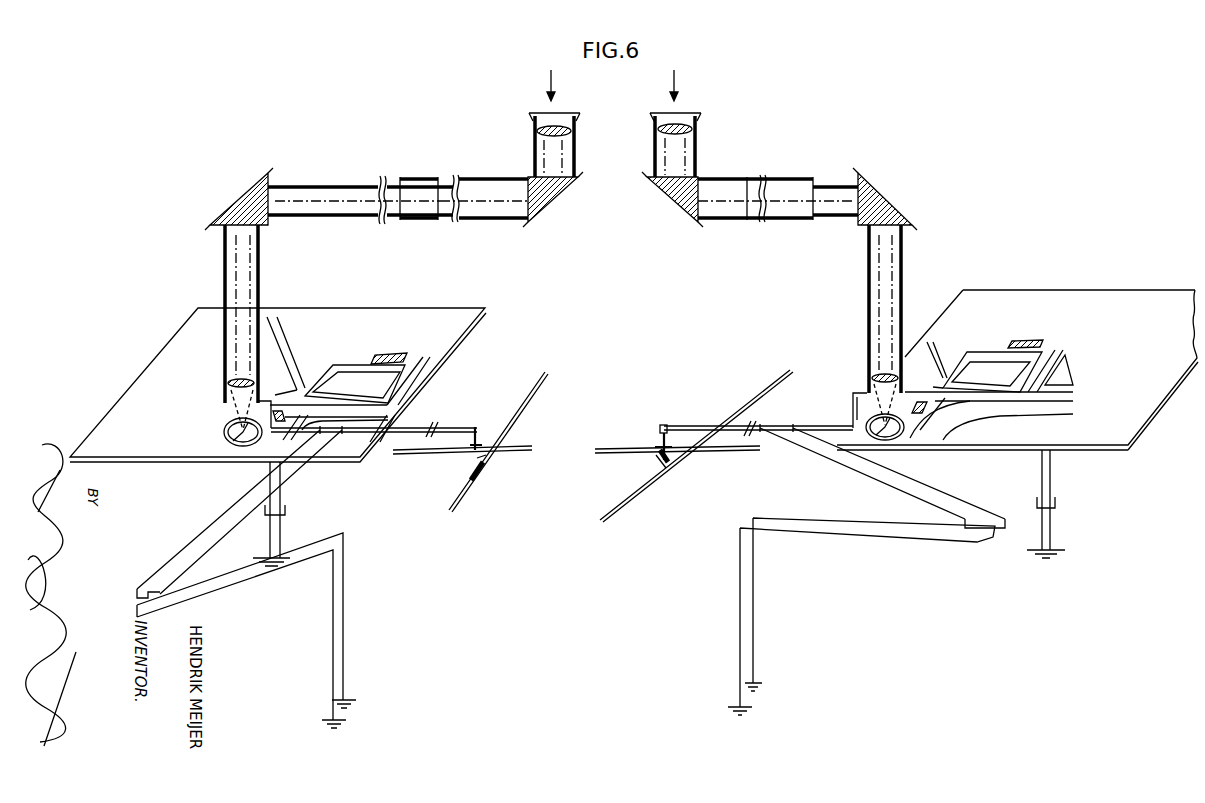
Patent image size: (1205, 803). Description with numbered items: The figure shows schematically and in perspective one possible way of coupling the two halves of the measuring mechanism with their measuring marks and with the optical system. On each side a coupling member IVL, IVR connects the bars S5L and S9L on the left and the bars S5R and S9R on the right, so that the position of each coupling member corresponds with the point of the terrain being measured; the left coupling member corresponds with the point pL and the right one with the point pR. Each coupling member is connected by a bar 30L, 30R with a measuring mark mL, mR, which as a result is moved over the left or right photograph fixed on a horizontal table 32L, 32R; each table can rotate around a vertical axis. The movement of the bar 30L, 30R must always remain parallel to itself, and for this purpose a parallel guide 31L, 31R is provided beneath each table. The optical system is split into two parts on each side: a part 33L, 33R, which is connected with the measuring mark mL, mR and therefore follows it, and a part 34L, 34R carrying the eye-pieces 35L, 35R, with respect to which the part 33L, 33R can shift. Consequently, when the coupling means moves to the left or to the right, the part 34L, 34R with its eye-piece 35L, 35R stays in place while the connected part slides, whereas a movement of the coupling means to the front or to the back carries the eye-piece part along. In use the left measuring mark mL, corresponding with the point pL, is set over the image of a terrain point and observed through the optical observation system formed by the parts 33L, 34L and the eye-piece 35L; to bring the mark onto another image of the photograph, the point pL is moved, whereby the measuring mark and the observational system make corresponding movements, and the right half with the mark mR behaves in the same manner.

The part of the optical system 33L is at (307, 185).
The part of the optical system 34L is at (412, 178).
The eye-piece 35L is at (531, 150).
The horizontal table 32L is at (162, 355).
The measuring mark mL is at (224, 437).
The bar 30L is at (441, 428).
The point corresponding to the measuring mark pL is at (477, 428).
The bar S5L is at (422, 455).
The bar S9L is at (527, 396).
The coupling member IVL is at (476, 456).
The parallel guide 31L is at (239, 582).
The part of the optical system 33R is at (828, 178).
The part of the optical system 34R is at (758, 177).
The eye-piece 35R is at (692, 140).
The horizontal table 32R is at (1148, 292).
The measuring mark mR is at (894, 440).
The bar 30R is at (760, 428).
The point corresponding to the measuring mark pR is at (665, 425).
The bar S5R is at (733, 452).
The bar S9R is at (769, 384).
The coupling member IVR is at (661, 445).
The parallel guide 31R is at (850, 534).